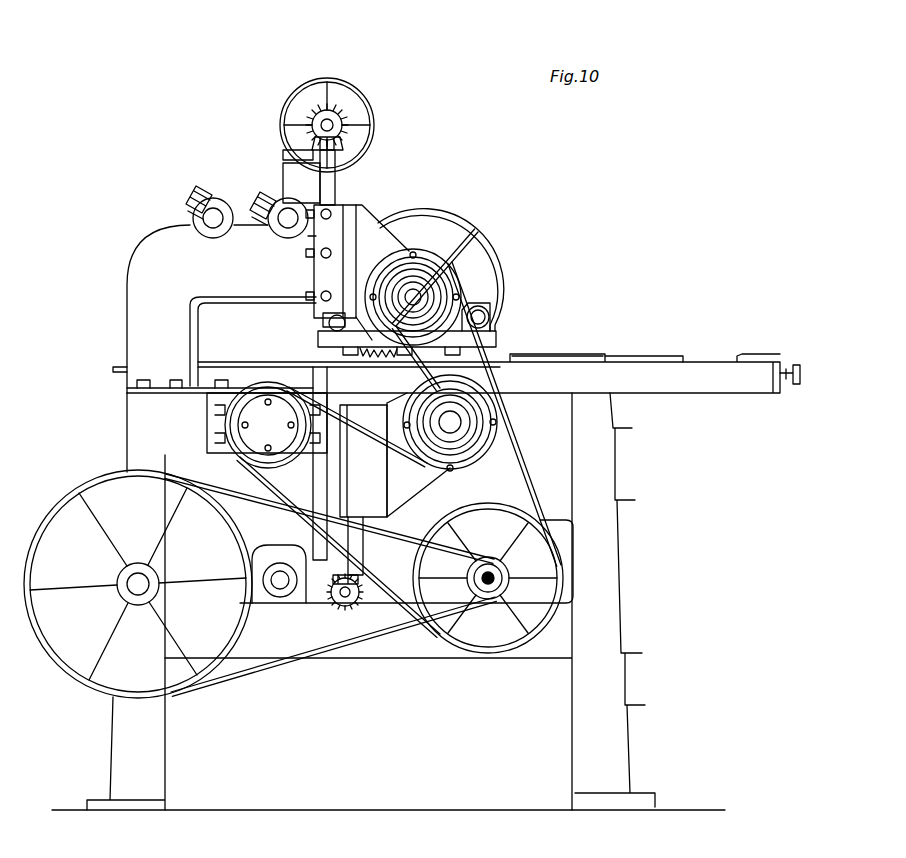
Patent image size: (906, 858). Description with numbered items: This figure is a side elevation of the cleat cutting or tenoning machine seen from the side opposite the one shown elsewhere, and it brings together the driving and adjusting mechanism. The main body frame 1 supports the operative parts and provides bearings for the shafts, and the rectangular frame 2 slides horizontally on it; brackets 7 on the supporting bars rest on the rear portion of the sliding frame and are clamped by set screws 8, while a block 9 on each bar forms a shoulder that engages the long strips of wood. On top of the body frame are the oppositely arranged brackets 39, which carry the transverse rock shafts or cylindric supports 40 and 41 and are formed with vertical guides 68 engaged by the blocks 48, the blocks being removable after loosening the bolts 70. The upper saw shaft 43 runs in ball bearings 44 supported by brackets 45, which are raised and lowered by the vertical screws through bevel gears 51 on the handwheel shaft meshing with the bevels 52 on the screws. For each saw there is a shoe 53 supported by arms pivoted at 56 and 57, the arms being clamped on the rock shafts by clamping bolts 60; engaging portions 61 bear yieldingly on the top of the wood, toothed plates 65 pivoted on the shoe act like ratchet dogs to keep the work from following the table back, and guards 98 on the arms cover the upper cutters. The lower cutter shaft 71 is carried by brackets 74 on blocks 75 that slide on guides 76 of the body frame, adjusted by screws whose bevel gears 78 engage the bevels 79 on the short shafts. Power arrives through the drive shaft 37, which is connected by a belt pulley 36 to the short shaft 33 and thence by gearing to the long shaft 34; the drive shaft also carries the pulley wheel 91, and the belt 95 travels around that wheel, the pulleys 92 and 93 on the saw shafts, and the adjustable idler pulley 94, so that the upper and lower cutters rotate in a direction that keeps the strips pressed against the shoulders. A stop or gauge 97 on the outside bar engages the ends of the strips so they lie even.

The main body frame 1 is at (610, 568).
The rectangular frame 2 is at (715, 386).
The brackets 7 is at (229, 366).
The set screws 8 is at (796, 359).
The block 9 is at (653, 357).
The short shaft 33 is at (138, 588).
The long shaft 34 is at (280, 590).
The belt pulley 36 is at (345, 655).
The drive shaft 37 is at (485, 577).
The brackets 39 is at (158, 270).
The rock shaft 40 is at (213, 223).
The rock shaft 41 is at (288, 223).
The transverse shaft 43 is at (416, 297).
The ball bearings 44 is at (415, 246).
The brackets 45 is at (382, 266).
The blocks 48 is at (330, 272).
The bevel gears 51 is at (345, 124).
The bevels 52 is at (340, 150).
The shoe 53 is at (490, 338).
The pivot 56 is at (487, 315).
The pivot 57 is at (328, 324).
The clamping bolts 60 is at (212, 197).
The engaging portions 61 is at (480, 367).
The plates 65 is at (373, 368).
The vertical guides 68 is at (330, 190).
The bolts 70 is at (330, 294).
The transverse shaft 71 is at (448, 420).
The brackets 74 is at (420, 455).
The blocks 75 is at (350, 463).
The guides 76 is at (362, 548).
The bevel gears 78 is at (338, 580).
The bevels 79 is at (347, 600).
The pulley wheel 91 is at (520, 620).
The pulley 92 is at (437, 268).
The pulley 93 is at (480, 428).
The idler pulley 94 is at (228, 422).
The belt 95 is at (562, 480).
The stop or gauge 97 is at (592, 355).
The guards 98 is at (445, 224).